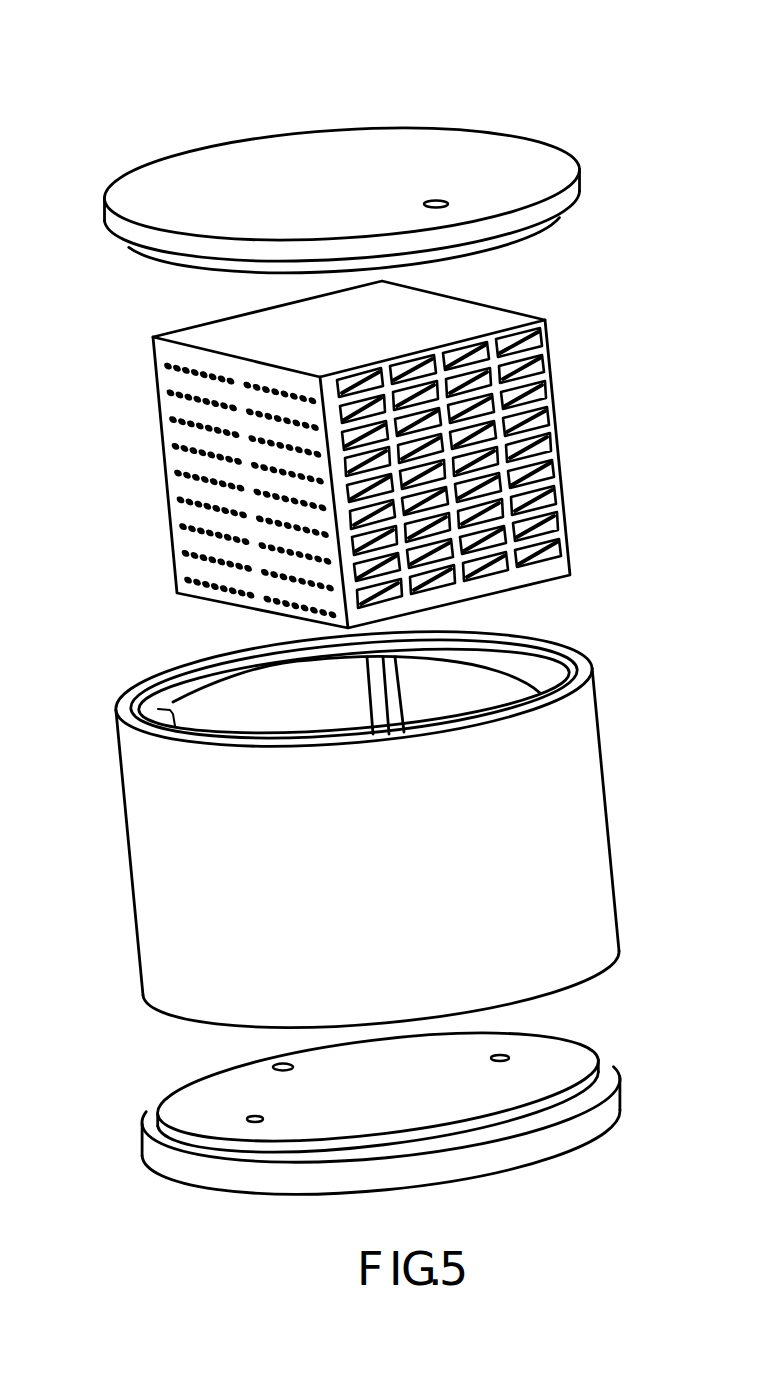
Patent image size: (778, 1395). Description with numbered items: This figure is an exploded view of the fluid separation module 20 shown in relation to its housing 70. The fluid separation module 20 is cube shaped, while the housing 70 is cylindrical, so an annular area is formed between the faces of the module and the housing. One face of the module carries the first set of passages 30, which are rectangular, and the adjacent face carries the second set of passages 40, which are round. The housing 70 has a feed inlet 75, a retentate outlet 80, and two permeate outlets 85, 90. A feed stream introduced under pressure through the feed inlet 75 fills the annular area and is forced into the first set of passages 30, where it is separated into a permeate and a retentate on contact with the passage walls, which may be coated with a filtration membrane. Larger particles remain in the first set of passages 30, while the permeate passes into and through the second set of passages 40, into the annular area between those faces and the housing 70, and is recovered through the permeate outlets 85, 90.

The fluid separation module 20 is at (555, 290).
The first set of passages 30 is at (530, 341).
The second set of passages 40 is at (173, 423).
The housing 70 is at (600, 772).
The feed inlet 75 is at (440, 200).
The retentate outlet 80 is at (273, 1066).
The permeate outlet 85 is at (245, 1122).
The permeate outlet 90 is at (505, 1057).